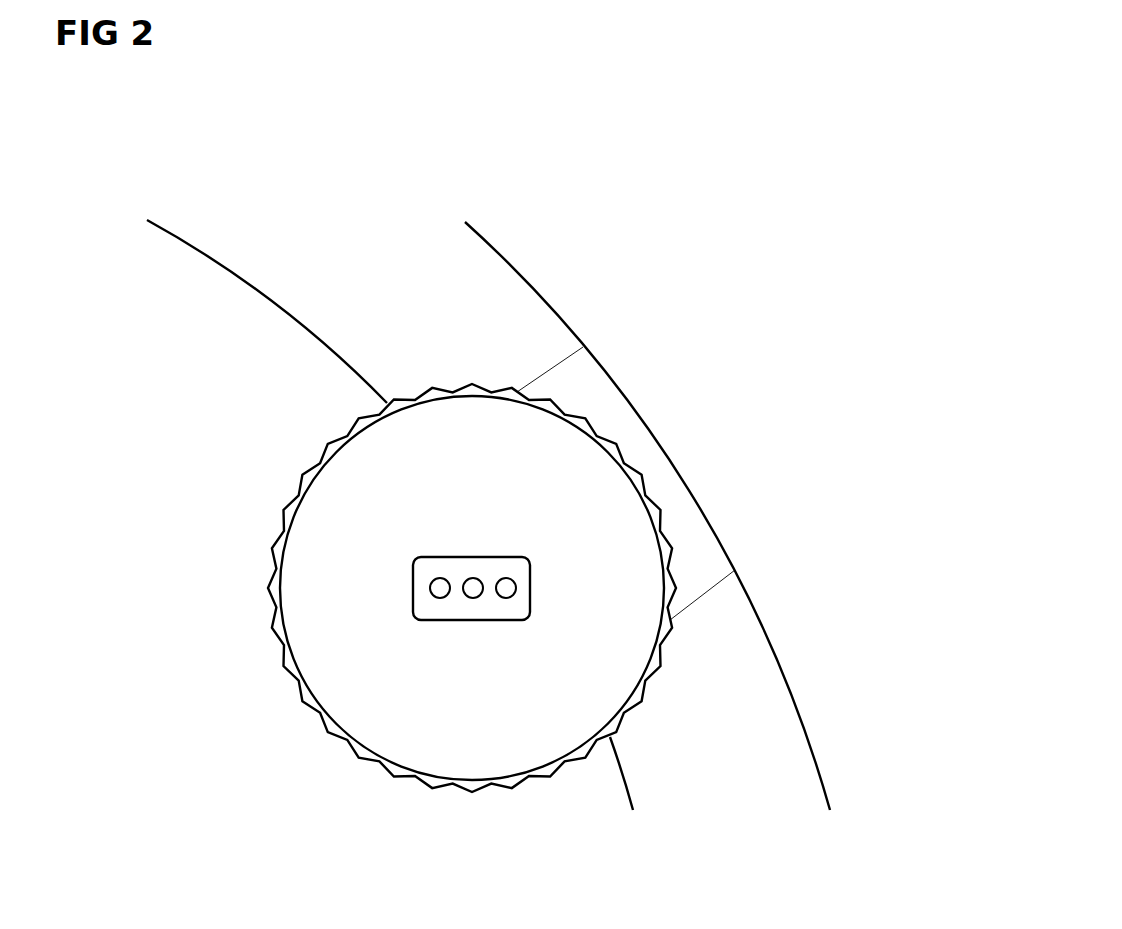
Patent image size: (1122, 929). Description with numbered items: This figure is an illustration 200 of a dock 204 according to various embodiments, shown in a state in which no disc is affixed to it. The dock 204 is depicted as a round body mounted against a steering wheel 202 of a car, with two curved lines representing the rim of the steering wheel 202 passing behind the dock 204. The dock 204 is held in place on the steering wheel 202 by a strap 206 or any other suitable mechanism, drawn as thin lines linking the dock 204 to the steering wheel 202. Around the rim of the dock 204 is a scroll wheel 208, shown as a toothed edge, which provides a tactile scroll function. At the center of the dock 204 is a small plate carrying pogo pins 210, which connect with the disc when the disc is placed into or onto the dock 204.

The illustration 200 is at (870, 107).
The steering wheel 202 is at (515, 288).
The dock 204 is at (325, 663).
The strap 206 is at (613, 400).
The scroll wheel 208 is at (430, 783).
The pogo pins 210 is at (472, 568).